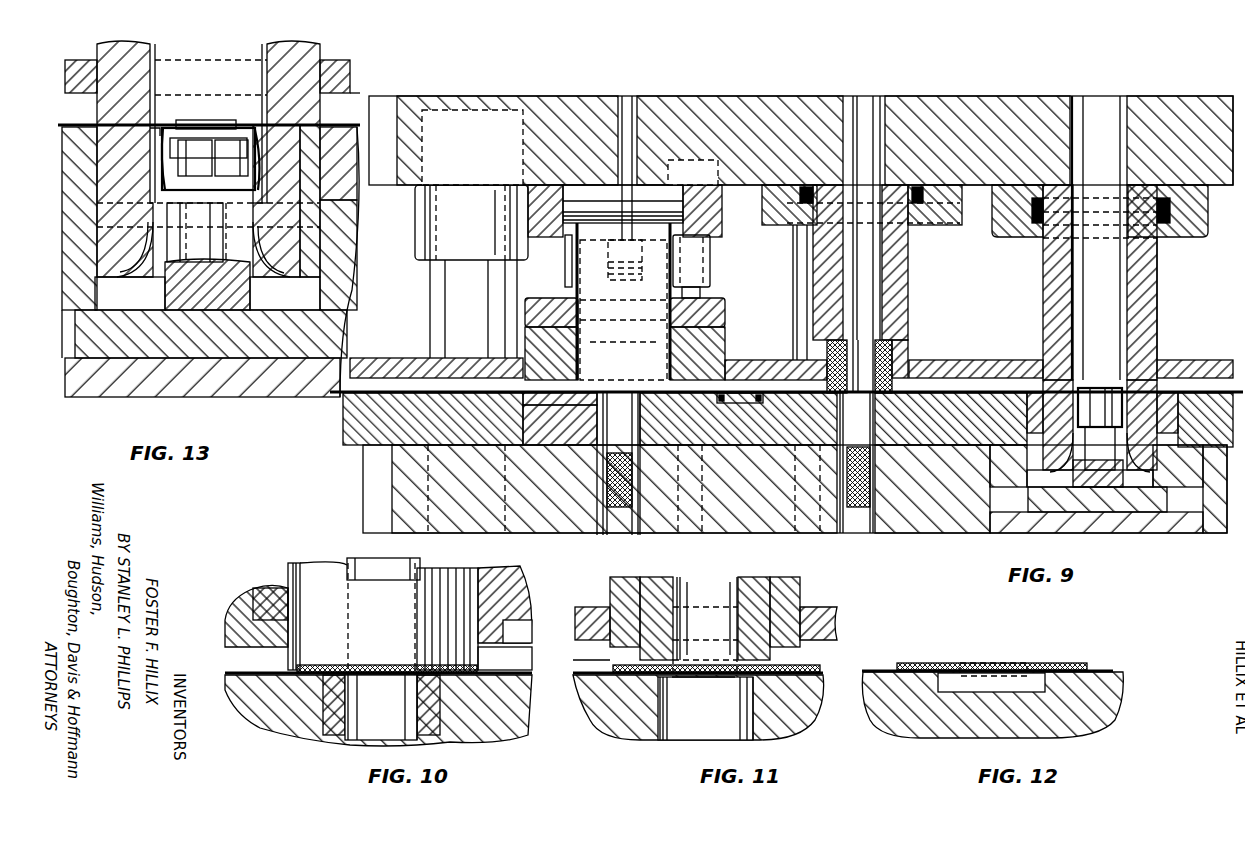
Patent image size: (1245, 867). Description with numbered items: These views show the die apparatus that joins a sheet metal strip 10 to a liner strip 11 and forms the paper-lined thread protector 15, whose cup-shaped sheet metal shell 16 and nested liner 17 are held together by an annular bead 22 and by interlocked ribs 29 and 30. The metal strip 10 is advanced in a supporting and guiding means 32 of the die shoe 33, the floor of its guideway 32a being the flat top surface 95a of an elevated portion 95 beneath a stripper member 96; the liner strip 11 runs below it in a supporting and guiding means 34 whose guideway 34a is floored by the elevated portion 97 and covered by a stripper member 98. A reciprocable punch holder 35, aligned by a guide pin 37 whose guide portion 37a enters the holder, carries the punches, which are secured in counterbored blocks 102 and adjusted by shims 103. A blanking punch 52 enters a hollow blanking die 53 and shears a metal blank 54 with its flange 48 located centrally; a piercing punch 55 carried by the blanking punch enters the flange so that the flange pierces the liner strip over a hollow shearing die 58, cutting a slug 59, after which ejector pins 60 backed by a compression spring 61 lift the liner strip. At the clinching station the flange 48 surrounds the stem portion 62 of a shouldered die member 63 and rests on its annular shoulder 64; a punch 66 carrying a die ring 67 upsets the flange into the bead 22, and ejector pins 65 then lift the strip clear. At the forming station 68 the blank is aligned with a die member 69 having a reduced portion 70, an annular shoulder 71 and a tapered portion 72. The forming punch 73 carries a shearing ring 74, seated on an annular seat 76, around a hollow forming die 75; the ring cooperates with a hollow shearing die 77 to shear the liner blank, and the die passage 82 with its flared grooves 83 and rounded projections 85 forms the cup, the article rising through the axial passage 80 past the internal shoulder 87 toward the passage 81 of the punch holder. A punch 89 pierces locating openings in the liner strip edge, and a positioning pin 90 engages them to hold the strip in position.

In FIG. 9, the sheet metal strip 10 is at (572, 317).
In FIG. 13, the liner strip 11 is at (84, 119).
In FIG. 9, the liner strip 11 is at (381, 383).
In FIG. 10, the liner strip 11 is at (224, 674).
In FIG. 11, the liner strip 11 is at (576, 679).
In FIG. 12, the liner strip 11 is at (880, 668).
In FIG. 13, the paper-lined thread protector 15 is at (247, 113).
In FIG. 9, the paper-lined thread protector 15 is at (1123, 398).
In FIG. 13, the sheet metal shell 16 is at (158, 126).
In FIG. 13, the liner 17 is at (160, 176).
In FIG. 11, the annular bead 22 is at (745, 690).
In FIG. 12, the annular bead 22 is at (948, 691).
In FIG. 13, the ribs of metal shell 29 is at (231, 158).
In FIG. 13, the ribs of liner 30 is at (210, 193).
In FIG. 9, the supporting and guiding means 32 is at (575, 286).
In FIG. 9, the longitudinal guideway 32a is at (551, 312).
In FIG. 13, the die support or die shoe 33 is at (346, 288).
In FIG. 9, the die support or die shoe 33 is at (962, 530).
In FIG. 9, the supporting and guiding means 34 is at (413, 358).
In FIG. 13, the longitudinal guideway 34a is at (352, 97).
In FIG. 9, the longitudinal guideway 34a is at (428, 398).
In FIG. 10, the longitudinal guideway 34a is at (247, 634).
In FIG. 11, the longitudinal guideway 34a is at (600, 657).
In FIG. 9, the punch holder 35 is at (1017, 106).
In FIG. 9, the guide pin 37 is at (440, 286).
In FIG. 9, the guide portion 37a is at (418, 213).
In FIG. 10, the flange 48 is at (380, 666).
In FIG. 9, the blanking punch 52 is at (567, 272).
In FIG. 10, the blanking punch 52 is at (291, 580).
In FIG. 9, the hollow blanking die 53 is at (551, 353).
In FIG. 10, the hollow blanking die 53 is at (500, 576).
In FIG. 9, the metal blank 54 is at (935, 362).
In FIG. 10, the metal blank 54 is at (335, 664).
In FIG. 11, the metal blank 54 is at (800, 665).
In FIG. 12, the metal blank 54 is at (1060, 662).
In FIG. 9, the piercing punch 55 is at (626, 343).
In FIG. 10, the piercing punch 55 is at (347, 567).
In FIG. 9, the hollow shearing die 58 is at (586, 421).
In FIG. 10, the hollow shearing die 58 is at (455, 735).
In FIG. 9, the slug 59 is at (620, 464).
In FIG. 10, the slug 59 is at (381, 707).
In FIG. 9, the ejector pins 60 is at (595, 464).
In FIG. 9, the compression spring 61 is at (605, 480).
In FIG. 9, the stem portion 62 is at (856, 346).
In FIG. 11, the stem portion 62 is at (705, 652).
In FIG. 9, the shouldered die member 63 is at (880, 421).
In FIG. 11, the shouldered die member 63 is at (760, 736).
In FIG. 11, the annular shoulder 64 is at (689, 690).
In FIG. 9, the ejector pins 65 is at (850, 477).
In FIG. 9, the punch 66 is at (905, 307).
In FIG. 11, the punch 66 is at (790, 592).
In FIG. 9, the die ring 67 is at (905, 347).
In FIG. 11, the die ring 67 is at (660, 580).
In FIG. 9, the forming station 68 is at (1168, 343).
In FIG. 13, the die member or stake 69 is at (165, 292).
In FIG. 9, the die member or stake 69 is at (1132, 480).
In FIG. 13, the reduced portion 70 is at (201, 119).
In FIG. 13, the annular shoulder 71 is at (198, 158).
In FIG. 13, the tapered portion 72 is at (161, 152).
In FIG. 13, the forming punch 73 is at (102, 48).
In FIG. 9, the forming punch 73 is at (1140, 303).
In FIG. 13, the shearing die ring 74 is at (322, 245).
In FIG. 9, the shearing die ring 74 is at (1036, 470).
In FIG. 9, the hollow forming die 75 is at (1150, 459).
In FIG. 9, the annular seat 76 is at (1166, 421).
In FIG. 13, the hollow shearing die 77 is at (79, 218).
In FIG. 9, the hollow shearing die 77 is at (1028, 413).
In FIG. 9, the axial passage 80 is at (1150, 284).
In FIG. 9, the passage 81 is at (1107, 106).
In FIG. 13, the die passage 82 is at (262, 216).
In FIG. 9, the die passage 82 is at (1045, 453).
In FIG. 13, the grooves 83 is at (252, 237).
In FIG. 13, the depending projections 85 is at (262, 282).
In FIG. 9, the depending projections 85 is at (1040, 491).
In FIG. 13, the internal shoulder 87 is at (262, 186).
In FIG. 9, the punch 89 is at (705, 284).
In FIG. 9, the positioning pin 90 is at (802, 357).
In FIG. 9, the elevated portion 95 is at (727, 338).
In FIG. 10, the elevated portion 95 is at (528, 606).
In FIG. 9, the flat top surface 95a is at (727, 306).
In FIG. 9, the stripper member 96 is at (512, 312).
In FIG. 9, the elevated portion 97 is at (885, 448).
In FIG. 11, the elevated portion 97 is at (622, 722).
In FIG. 12, the elevated portion 97 is at (1120, 701).
In FIG. 13, the stripper member 98 is at (338, 62).
In FIG. 9, the stripper member 98 is at (760, 362).
In FIG. 11, the stripper member 98 is at (835, 611).
In FIG. 9, the counterbored blocks 102 is at (1195, 213).
In FIG. 9, the shims 103 is at (1166, 226).